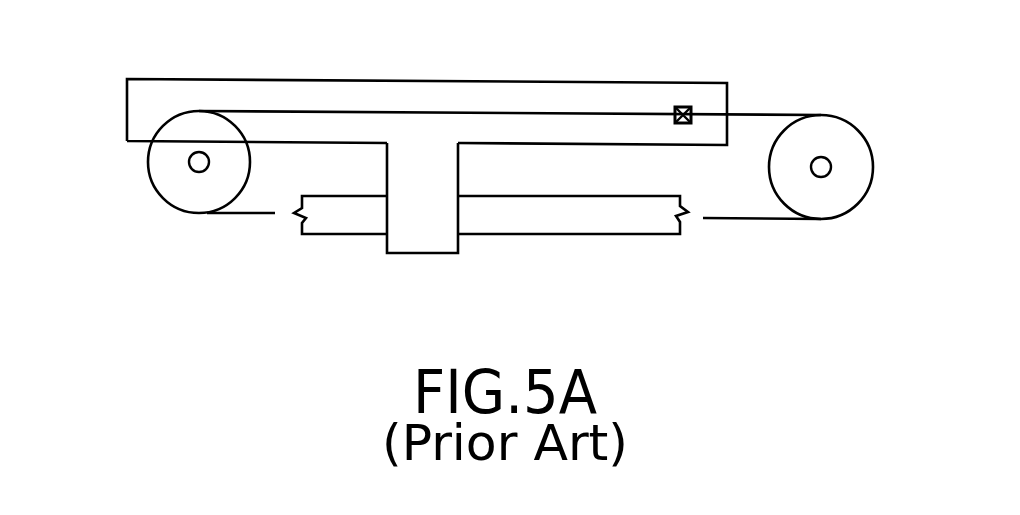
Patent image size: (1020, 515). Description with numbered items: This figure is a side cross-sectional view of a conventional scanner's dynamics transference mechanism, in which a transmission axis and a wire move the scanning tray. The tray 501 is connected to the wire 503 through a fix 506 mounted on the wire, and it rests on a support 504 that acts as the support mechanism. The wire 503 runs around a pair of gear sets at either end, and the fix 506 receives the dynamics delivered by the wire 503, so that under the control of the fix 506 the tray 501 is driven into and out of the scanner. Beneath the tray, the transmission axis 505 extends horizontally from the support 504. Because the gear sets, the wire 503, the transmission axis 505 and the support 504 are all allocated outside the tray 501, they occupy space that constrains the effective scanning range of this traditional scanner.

The tray 501 is at (408, 93).
The wire 503 is at (757, 113).
The support 504 is at (422, 245).
The transmission axis 505 is at (603, 234).
The fix 506 is at (678, 105).